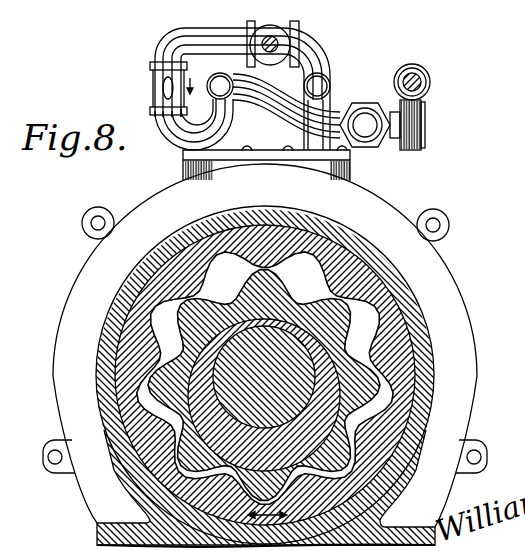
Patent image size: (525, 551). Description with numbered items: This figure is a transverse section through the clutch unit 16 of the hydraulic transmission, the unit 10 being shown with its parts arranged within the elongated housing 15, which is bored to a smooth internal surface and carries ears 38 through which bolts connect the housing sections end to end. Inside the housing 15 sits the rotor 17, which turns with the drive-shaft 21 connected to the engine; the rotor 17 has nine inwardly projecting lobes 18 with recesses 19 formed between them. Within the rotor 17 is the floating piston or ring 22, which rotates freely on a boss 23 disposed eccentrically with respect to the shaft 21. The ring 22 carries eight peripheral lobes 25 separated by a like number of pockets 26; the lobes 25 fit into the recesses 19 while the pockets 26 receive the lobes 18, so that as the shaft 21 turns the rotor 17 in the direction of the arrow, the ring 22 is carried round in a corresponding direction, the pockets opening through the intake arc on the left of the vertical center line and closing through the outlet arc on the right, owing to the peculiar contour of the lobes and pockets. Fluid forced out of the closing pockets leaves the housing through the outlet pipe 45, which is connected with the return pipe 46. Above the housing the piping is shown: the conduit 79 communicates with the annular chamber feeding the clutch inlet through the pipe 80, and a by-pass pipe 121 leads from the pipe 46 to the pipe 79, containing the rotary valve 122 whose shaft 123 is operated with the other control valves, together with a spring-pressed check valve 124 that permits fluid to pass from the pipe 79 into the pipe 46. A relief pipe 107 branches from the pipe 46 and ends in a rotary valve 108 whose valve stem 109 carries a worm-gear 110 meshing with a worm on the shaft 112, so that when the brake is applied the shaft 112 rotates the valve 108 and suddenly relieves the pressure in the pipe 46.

The pump casing 10 is at (265, 357).
The housing 15 is at (435, 363).
The clutch unit 16 is at (403, 413).
The rotor 17 is at (110, 303).
The lobes 18 is at (408, 318).
The recesses 19 is at (210, 273).
The drive-shaft 21 is at (233, 386).
The floating piston or ring 22 is at (357, 357).
The boss 23 is at (252, 426).
The lobes 25 is at (380, 320).
The pockets 26 is at (370, 343).
The ears 38 is at (48, 457).
The outlet pipe 45 is at (187, 160).
The return pipe 46 is at (172, 47).
The conduit or pipe 79 is at (330, 53).
The pipe 80 is at (329, 88).
The relief pipe 107 is at (268, 122).
The rotary valve 108 is at (361, 107).
The valve stem 109 is at (394, 140).
The worm-gear 110 is at (424, 124).
The shaft 112 is at (420, 80).
The by-pass pipe 121 is at (198, 37).
The rotary valve 122 is at (292, 23).
The shaft 123 is at (268, 33).
The check valve 124 is at (152, 97).